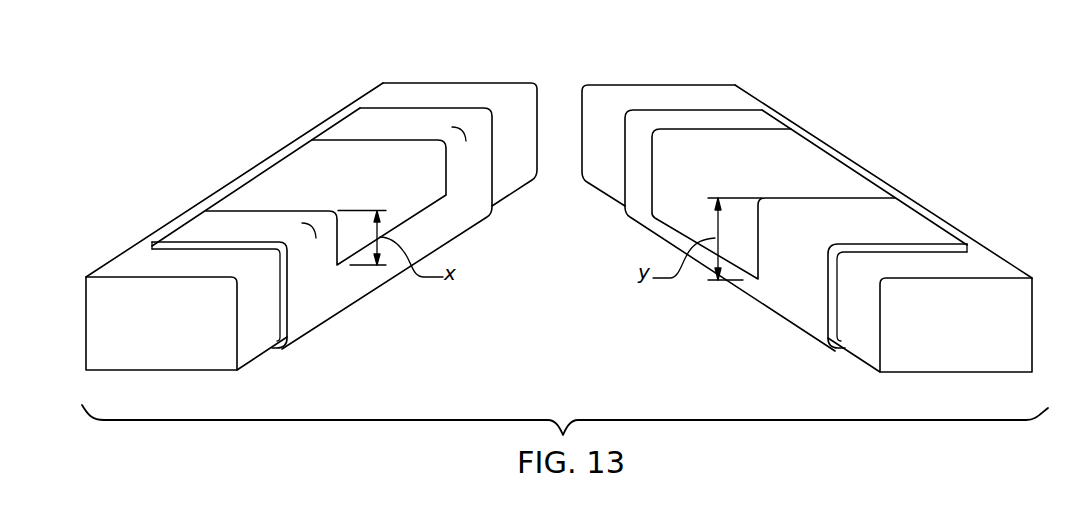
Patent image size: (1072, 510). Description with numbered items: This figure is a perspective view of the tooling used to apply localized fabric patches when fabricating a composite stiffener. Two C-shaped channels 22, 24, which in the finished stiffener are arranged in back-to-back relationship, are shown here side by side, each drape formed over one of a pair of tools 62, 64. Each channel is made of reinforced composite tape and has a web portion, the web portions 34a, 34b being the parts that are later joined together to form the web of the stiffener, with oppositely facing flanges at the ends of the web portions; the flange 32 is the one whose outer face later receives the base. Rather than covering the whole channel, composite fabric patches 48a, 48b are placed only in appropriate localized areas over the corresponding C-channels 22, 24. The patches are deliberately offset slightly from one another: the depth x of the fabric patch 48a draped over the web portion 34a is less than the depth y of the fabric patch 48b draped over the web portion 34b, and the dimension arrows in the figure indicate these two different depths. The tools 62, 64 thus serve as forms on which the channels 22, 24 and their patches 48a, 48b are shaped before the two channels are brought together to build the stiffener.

The C-shaped channel 22 is at (357, 122).
The C-shaped channel 24 is at (753, 121).
The flange 32 is at (209, 227).
The web portion 34a is at (313, 296).
The web portion 34b is at (803, 298).
The composite fabric patch 48a is at (393, 153).
The composite fabric patch 48b is at (802, 165).
The tool 62 is at (134, 300).
The tool 64 is at (983, 270).